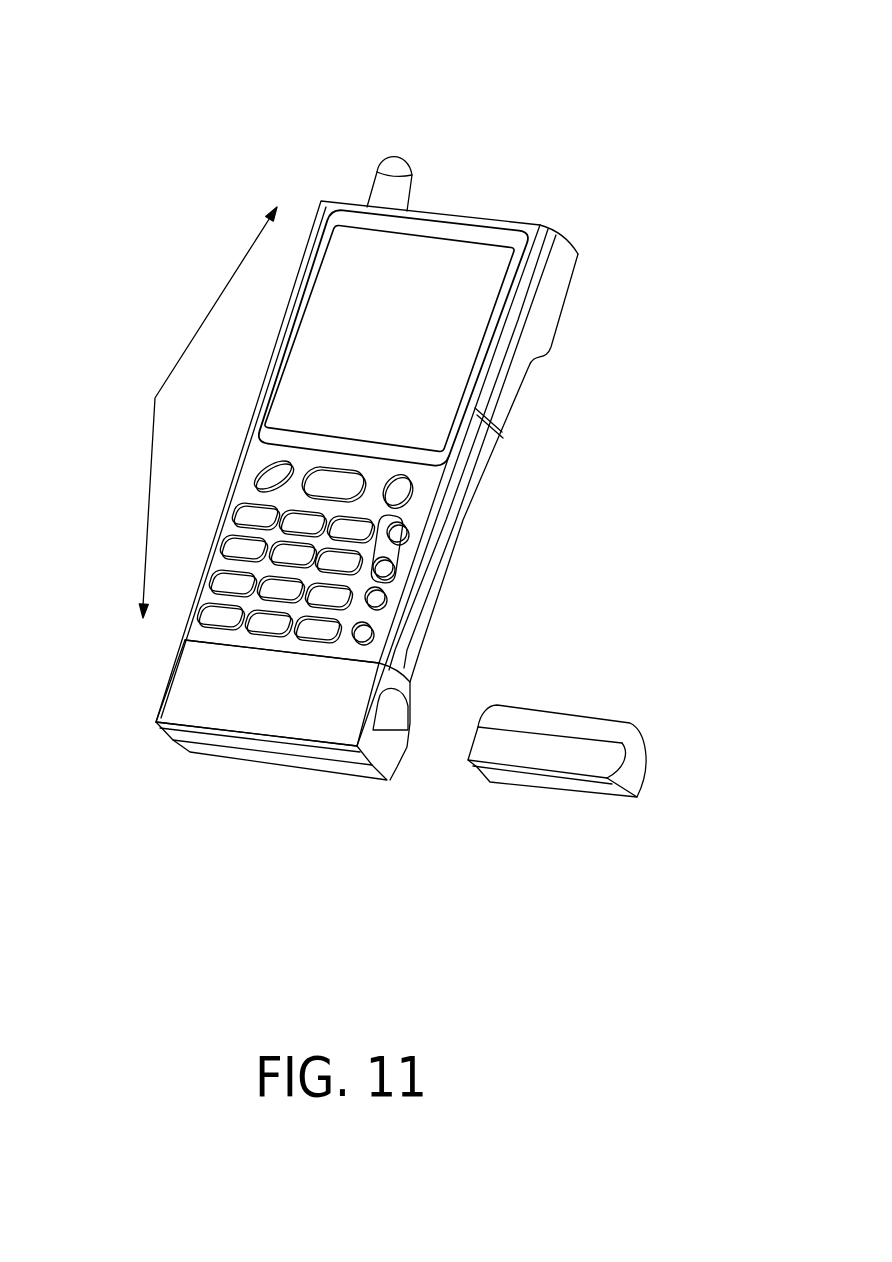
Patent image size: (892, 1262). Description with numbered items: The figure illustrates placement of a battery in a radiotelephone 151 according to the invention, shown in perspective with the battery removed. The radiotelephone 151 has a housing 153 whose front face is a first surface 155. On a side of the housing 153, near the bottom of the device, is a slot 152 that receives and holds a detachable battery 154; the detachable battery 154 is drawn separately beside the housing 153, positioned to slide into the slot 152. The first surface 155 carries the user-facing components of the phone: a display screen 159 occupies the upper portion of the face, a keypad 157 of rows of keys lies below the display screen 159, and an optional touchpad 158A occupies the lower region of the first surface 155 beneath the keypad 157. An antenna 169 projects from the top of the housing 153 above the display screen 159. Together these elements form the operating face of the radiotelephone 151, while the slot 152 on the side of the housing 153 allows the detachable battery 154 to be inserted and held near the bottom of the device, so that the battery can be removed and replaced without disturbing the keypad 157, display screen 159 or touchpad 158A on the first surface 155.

The radiotelephone 151 is at (424, 427).
The slot 152 is at (387, 740).
The housing 153 is at (467, 482).
The detachable battery 154 is at (603, 724).
The first surface 155 is at (155, 398).
The keypad 157 is at (320, 628).
The touchpad 158A is at (223, 688).
The display screen 159 is at (415, 297).
The antenna 169 is at (397, 162).